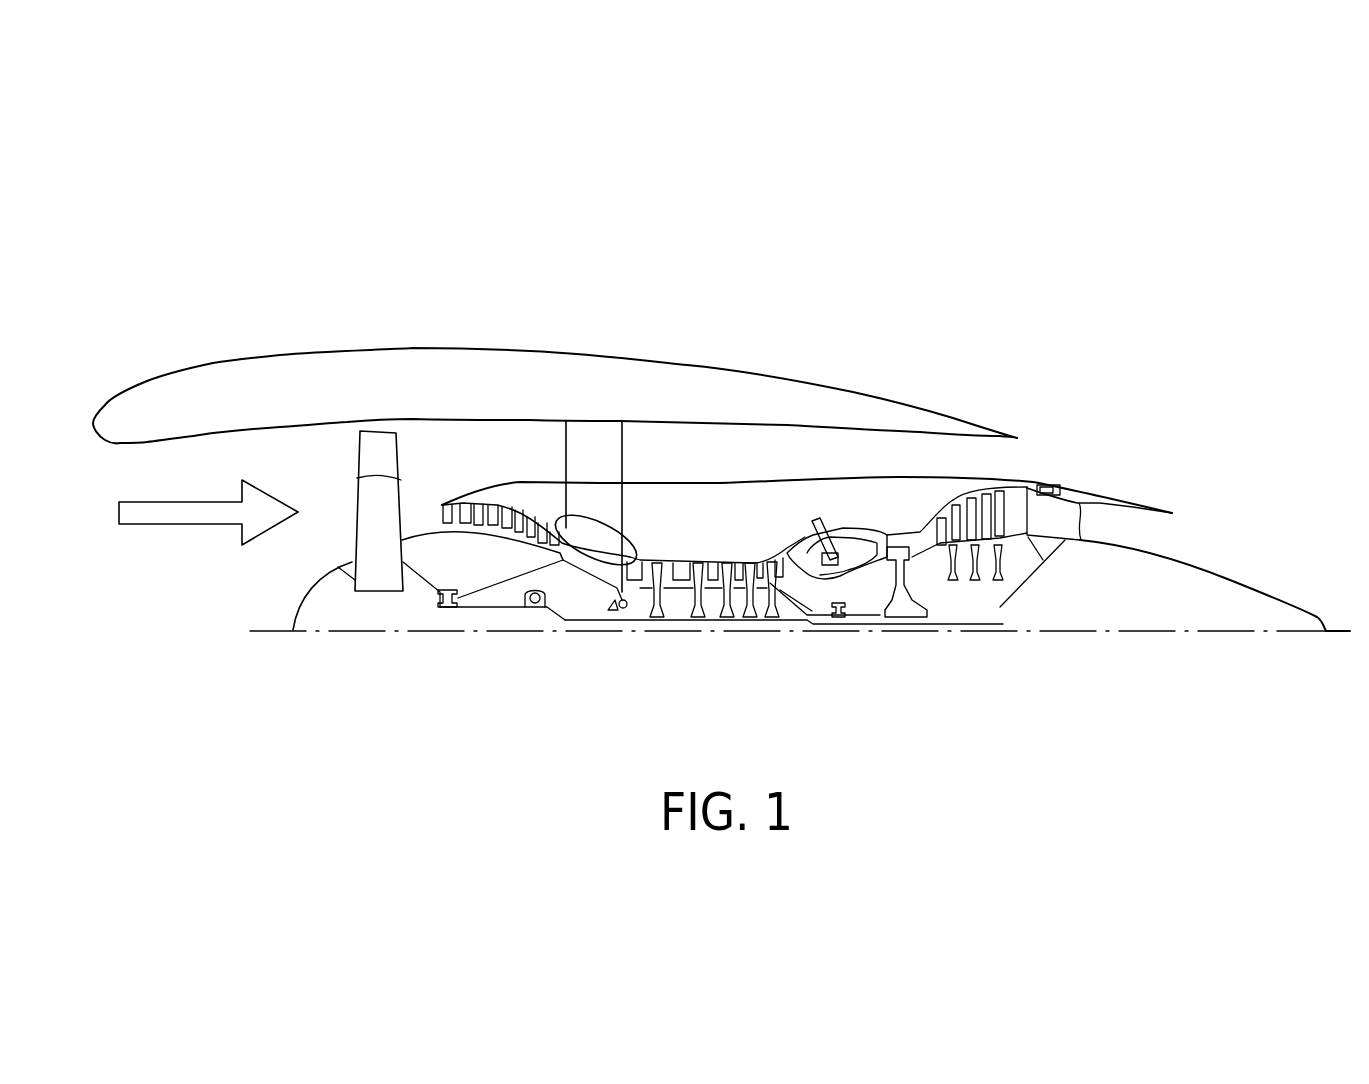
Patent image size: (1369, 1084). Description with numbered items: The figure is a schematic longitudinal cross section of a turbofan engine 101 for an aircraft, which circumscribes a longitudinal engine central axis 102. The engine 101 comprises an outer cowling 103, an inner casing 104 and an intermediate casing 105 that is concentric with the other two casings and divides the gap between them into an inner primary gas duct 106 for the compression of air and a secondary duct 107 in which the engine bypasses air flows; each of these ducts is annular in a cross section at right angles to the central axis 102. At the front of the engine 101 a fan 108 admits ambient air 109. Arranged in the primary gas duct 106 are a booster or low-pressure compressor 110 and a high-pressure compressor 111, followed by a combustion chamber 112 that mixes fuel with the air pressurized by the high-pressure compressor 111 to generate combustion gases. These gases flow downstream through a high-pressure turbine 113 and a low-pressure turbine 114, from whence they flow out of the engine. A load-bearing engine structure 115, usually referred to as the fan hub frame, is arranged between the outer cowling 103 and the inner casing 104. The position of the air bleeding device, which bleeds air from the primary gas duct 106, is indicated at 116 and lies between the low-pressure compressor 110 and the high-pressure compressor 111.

The turbofan engine 101 is at (1000, 330).
The longitudinal engine central axis 102 is at (1193, 632).
The outer cowling 103 is at (198, 388).
The inner casing 104 is at (570, 600).
The intermediate casing 105 is at (768, 502).
The primary gas duct 106 is at (433, 513).
The secondary duct 107 is at (515, 465).
The fan 108 is at (373, 440).
The ambient air 109 is at (163, 518).
The low-pressure compressor 110 is at (458, 547).
The high-pressure compressor 111 is at (733, 642).
The combustion chamber 112 is at (863, 560).
The high-pressure turbine 113 is at (922, 645).
The low-pressure turbine 114 is at (998, 583).
The load-bearing engine structure 115 is at (605, 408).
The position of the air bleeding device 116 is at (620, 553).